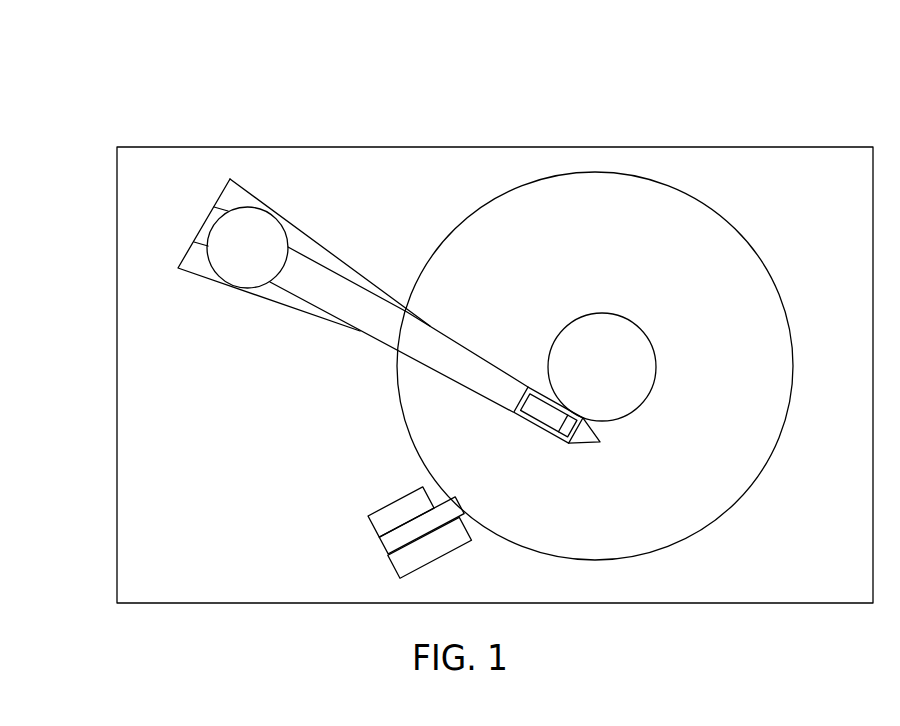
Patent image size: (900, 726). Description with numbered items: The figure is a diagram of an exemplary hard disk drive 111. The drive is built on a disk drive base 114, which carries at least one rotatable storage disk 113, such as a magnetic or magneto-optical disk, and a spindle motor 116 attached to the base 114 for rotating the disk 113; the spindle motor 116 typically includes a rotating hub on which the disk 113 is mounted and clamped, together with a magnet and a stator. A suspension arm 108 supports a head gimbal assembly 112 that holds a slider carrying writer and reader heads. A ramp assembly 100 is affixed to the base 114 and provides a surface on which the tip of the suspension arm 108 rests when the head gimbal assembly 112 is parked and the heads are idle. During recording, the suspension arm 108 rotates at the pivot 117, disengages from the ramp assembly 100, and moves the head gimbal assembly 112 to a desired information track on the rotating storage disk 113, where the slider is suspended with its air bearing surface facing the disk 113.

The hard disk drive 111 is at (338, 147).
The disk drive base 114 is at (137, 502).
The rotatable storage disk 113 is at (442, 241).
The spindle motor 116 is at (602, 314).
The suspension arm 108 is at (362, 333).
The pivot 117 is at (237, 277).
The head gimbal assembly 112 is at (540, 432).
The ramp assembly 100 is at (380, 542).